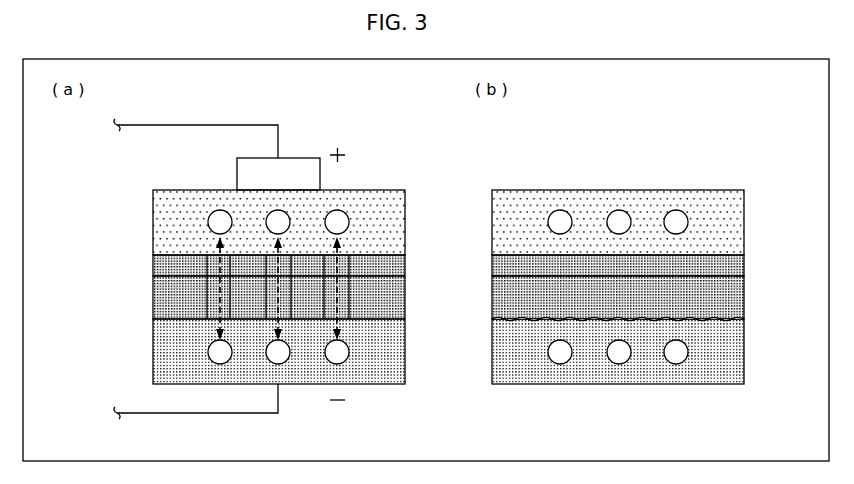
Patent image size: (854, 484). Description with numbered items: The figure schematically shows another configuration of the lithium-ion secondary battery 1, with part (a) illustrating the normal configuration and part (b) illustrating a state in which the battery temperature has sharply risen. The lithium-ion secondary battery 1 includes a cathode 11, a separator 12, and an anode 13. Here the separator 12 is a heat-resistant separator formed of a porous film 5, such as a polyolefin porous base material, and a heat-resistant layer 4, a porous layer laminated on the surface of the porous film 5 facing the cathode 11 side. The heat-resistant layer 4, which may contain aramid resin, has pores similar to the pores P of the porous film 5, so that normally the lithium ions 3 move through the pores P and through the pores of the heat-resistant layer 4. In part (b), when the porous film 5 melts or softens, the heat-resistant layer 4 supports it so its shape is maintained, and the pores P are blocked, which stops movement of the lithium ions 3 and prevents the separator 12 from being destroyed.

The lithium-ion secondary battery 1 is at (70, 190).
The lithium ions 3 is at (221, 213).
The heat-resistant layer 4 is at (152, 265).
The porous film 5 is at (152, 302).
The cathode 11 is at (152, 221).
The separator 12 is at (113, 258).
The anode 13 is at (152, 353).
The pores P is at (227, 283).